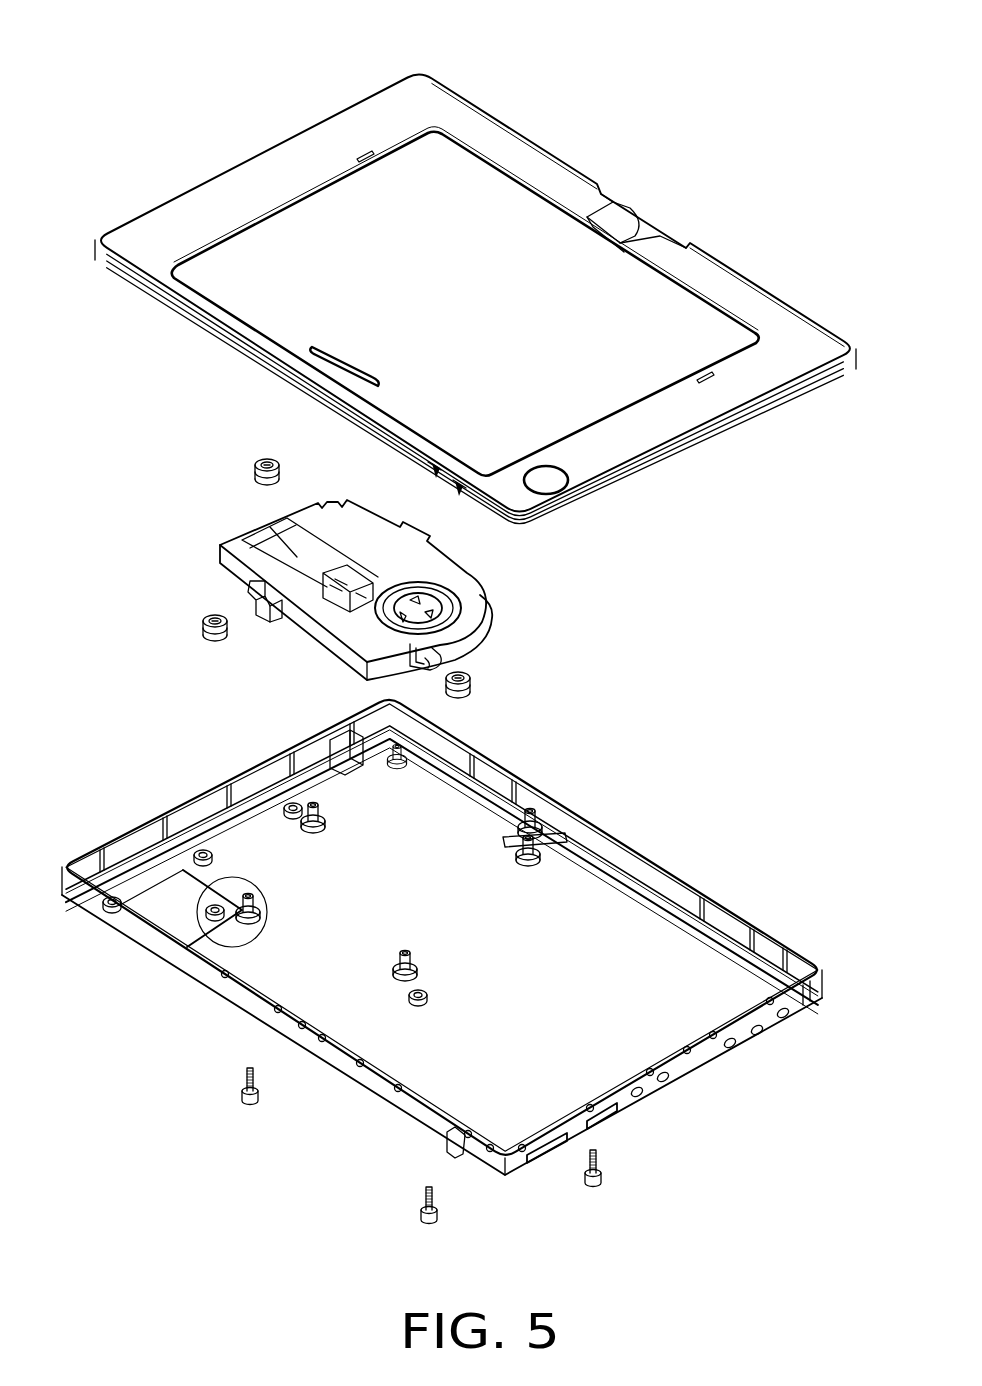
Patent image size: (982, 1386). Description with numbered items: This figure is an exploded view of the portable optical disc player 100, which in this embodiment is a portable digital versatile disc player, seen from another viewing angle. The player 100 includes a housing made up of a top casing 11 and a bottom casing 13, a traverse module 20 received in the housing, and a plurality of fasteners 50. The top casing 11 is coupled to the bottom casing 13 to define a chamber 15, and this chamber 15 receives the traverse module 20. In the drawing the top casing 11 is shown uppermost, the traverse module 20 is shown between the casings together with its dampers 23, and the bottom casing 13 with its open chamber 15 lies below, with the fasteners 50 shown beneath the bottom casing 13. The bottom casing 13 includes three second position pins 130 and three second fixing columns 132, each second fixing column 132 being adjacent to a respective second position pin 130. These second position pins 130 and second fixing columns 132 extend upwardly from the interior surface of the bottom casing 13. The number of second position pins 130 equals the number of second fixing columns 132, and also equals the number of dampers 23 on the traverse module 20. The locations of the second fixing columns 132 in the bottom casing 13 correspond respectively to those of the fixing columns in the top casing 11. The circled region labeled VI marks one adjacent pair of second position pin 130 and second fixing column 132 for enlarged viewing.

The portable optical disc player 100 is at (213, 38).
The top casing 11 is at (535, 160).
The bottom casing 13 is at (368, 1083).
The chamber 15 is at (585, 935).
The traverse module 20 is at (240, 548).
The damper 23 is at (263, 461).
The fastener 50 is at (252, 1106).
The second position pin 130 is at (245, 918).
The second fixing column 132 is at (212, 914).
The section view indicator VI is at (230, 878).